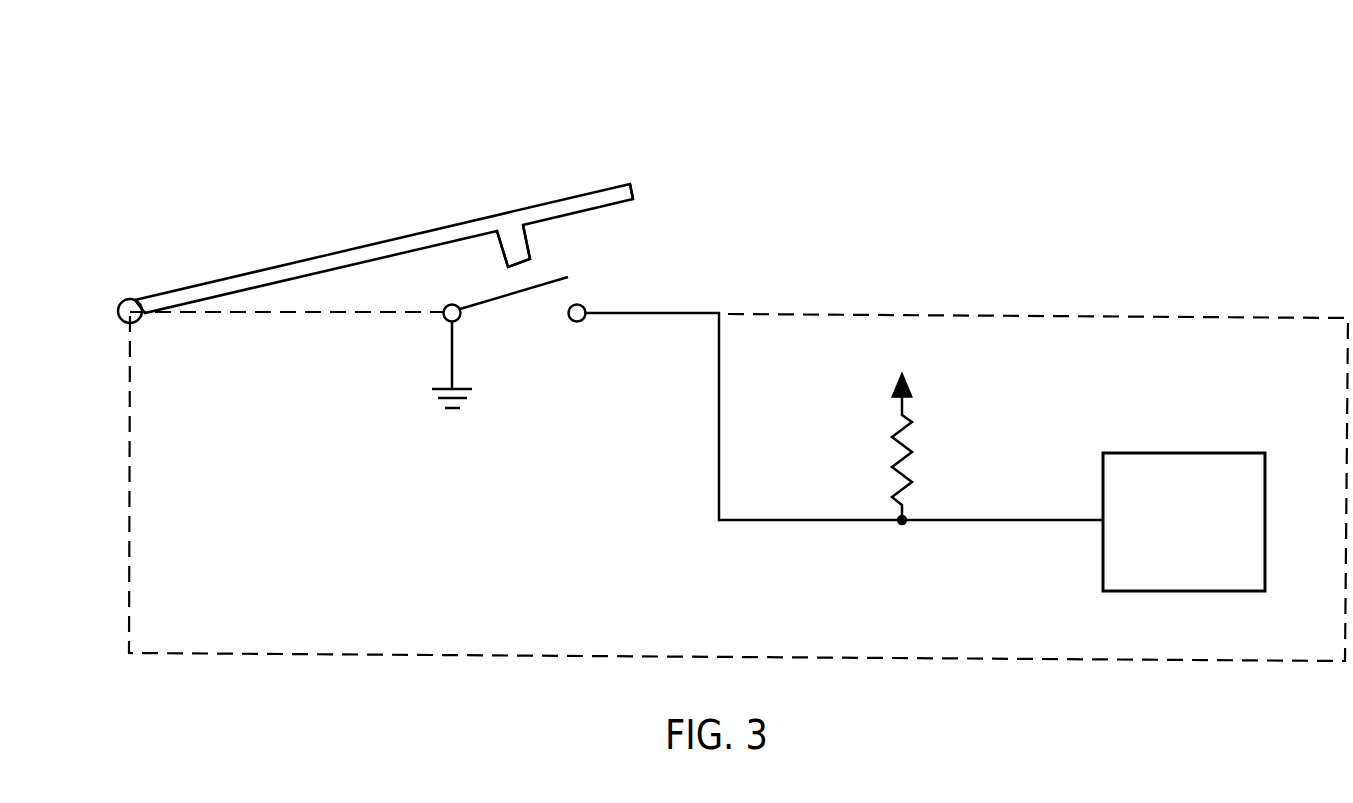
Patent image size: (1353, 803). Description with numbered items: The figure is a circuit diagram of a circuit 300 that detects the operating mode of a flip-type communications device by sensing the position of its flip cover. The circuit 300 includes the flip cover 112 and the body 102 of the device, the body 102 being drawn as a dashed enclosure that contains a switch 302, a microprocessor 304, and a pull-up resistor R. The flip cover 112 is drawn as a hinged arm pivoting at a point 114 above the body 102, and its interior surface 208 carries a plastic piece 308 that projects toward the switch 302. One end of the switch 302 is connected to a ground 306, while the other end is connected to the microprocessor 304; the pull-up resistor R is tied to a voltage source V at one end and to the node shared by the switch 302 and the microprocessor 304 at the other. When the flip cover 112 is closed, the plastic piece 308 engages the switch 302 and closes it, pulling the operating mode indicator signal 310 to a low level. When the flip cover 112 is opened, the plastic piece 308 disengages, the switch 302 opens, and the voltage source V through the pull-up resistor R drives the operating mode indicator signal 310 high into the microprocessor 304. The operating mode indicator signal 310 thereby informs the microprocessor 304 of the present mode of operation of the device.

The circuit 300 is at (890, 98).
The body 102 is at (1013, 316).
The flip cover 112 is at (345, 247).
The pivot / hinge 114 is at (127, 299).
The interior surface 208 is at (623, 202).
The plastic piece 308 is at (508, 260).
The switch 302 is at (545, 282).
The ground 306 is at (460, 383).
The microprocessor 304 is at (1186, 453).
The operating mode indicator signal 310 is at (1023, 523).